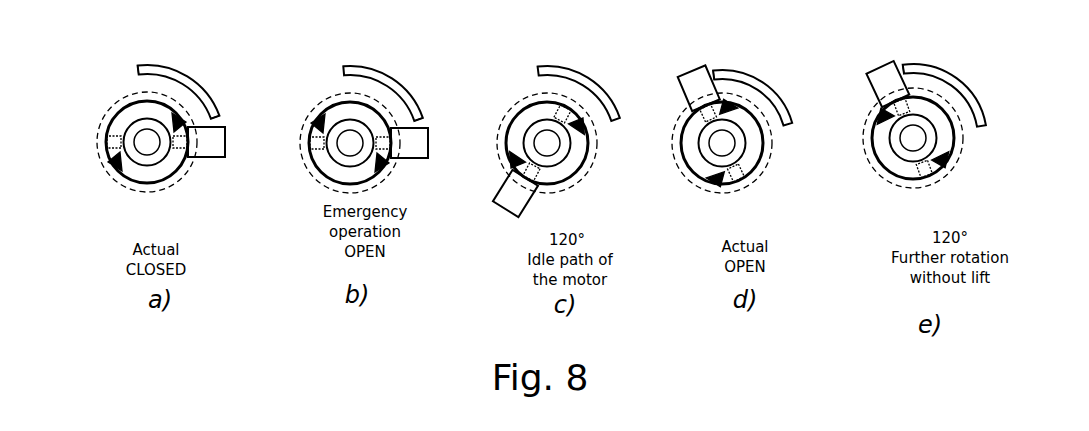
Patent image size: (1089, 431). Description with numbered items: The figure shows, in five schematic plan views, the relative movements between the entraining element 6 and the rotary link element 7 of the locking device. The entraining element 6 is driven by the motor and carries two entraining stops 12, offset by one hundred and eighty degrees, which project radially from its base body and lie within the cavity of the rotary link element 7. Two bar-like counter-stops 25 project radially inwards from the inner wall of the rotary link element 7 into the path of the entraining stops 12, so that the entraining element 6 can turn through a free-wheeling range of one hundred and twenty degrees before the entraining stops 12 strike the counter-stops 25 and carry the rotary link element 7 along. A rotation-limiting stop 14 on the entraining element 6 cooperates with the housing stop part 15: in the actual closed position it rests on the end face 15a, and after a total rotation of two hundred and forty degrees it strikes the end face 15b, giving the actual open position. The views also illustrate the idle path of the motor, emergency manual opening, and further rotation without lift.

The entraining element 6 is at (143, 157).
The rotary link element 7 is at (107, 125).
The entraining stops 12 is at (107, 143).
The rotation-limiting stop 14 is at (210, 143).
The housing stop part 15 is at (173, 82).
The end face of the housing stop part 15a is at (222, 128).
The end face of the housing stop part 15b is at (137, 70).
The counter-stops 25 is at (177, 118).